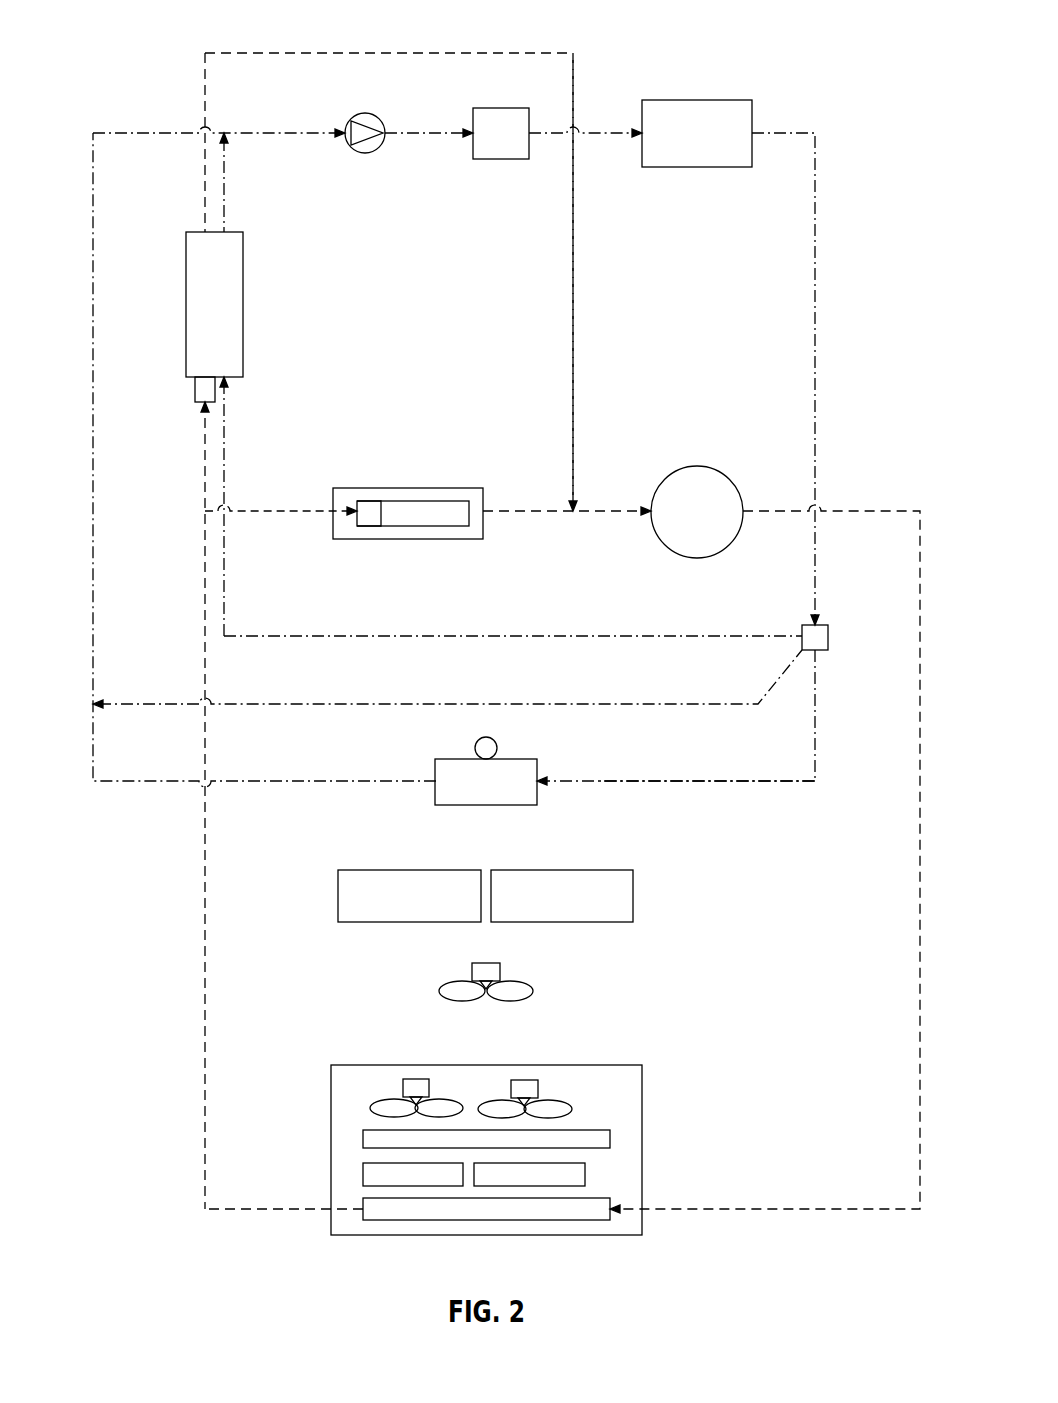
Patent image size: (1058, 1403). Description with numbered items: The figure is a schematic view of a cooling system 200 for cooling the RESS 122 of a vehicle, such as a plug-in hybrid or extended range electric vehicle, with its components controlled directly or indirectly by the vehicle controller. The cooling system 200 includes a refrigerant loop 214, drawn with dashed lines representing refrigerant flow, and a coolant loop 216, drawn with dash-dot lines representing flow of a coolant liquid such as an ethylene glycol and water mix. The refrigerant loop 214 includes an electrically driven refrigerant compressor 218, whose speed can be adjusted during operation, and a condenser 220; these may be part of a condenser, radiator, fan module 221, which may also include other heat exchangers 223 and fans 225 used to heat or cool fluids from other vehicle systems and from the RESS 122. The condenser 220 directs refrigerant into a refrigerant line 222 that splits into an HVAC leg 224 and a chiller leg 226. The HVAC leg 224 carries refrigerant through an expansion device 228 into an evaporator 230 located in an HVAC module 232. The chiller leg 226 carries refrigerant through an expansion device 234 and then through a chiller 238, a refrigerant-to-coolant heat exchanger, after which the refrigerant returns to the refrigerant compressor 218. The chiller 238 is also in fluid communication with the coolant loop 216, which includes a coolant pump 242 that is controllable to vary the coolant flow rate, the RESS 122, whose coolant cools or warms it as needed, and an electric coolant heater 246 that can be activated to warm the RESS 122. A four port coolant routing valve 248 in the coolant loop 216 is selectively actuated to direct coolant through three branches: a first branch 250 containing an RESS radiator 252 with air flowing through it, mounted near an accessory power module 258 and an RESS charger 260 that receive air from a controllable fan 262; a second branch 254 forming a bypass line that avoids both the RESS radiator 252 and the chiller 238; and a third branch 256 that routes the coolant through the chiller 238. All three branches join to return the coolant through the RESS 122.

The cooling system 200 is at (838, 30).
The RESS 122 is at (719, 100).
The refrigerant loop 214 is at (853, 512).
The coolant loop 216 is at (142, 133).
The refrigerant compressor 218 is at (697, 558).
The condenser 220 is at (570, 1220).
The condenser, radiator, fan module (CRFM) 221 is at (392, 1235).
The refrigerant line 222 is at (205, 972).
The heat exchangers 223 is at (622, 1158).
The HVAC leg 224 is at (263, 515).
The fans 225 is at (416, 1079).
The chiller leg 226 is at (575, 292).
The expansion device 228 is at (372, 501).
The evaporator 230 is at (420, 527).
The HVAC module 232 is at (450, 488).
The expansion device 234 is at (195, 388).
The chiller 238 is at (186, 303).
The coolant pump 242 is at (365, 113).
The electric coolant heater 246 is at (501, 108).
The four port coolant routing valve 248 is at (828, 638).
The first branch 250 is at (748, 782).
The RESS radiator 252 is at (486, 805).
The second branch 254 is at (698, 705).
The third branch 256 is at (633, 637).
The accessory power module 258 is at (633, 893).
The RESS charger 260 is at (338, 893).
The controllable fan 262 is at (530, 990).